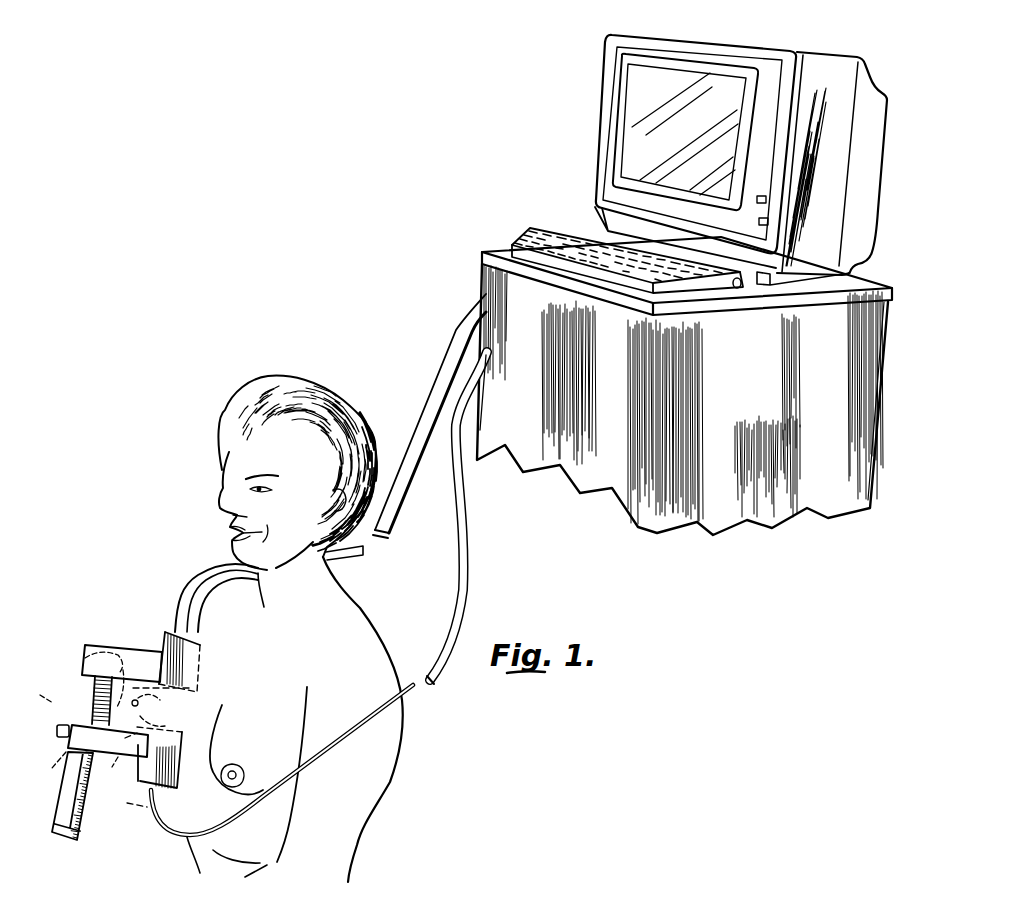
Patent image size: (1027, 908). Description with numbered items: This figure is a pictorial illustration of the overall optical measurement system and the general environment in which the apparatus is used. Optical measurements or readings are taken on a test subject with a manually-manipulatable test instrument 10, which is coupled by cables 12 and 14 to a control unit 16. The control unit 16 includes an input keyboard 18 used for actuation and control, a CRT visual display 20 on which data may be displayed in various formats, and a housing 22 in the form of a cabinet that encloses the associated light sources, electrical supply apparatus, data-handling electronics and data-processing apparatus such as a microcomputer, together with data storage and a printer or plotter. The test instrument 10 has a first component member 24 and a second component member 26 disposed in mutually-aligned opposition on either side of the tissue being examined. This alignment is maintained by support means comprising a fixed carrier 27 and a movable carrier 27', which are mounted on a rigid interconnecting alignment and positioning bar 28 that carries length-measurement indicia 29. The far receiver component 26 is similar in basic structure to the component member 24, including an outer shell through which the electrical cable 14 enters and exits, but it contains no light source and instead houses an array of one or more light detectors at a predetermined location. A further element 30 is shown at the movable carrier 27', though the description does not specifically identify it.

The test instrument 10 is at (125, 644).
The cable 12 is at (403, 490).
The cable 14 is at (473, 555).
The control unit 16 is at (568, 112).
The input keyboard 18 is at (560, 232).
The CRT visual display 20 is at (692, 38).
The housing 22 is at (781, 405).
The first component member 24 is at (194, 640).
The second component member 26 is at (137, 774).
The fixed carrier 27 is at (105, 643).
The movable carrier 27' is at (82, 756).
The alignment and positioning bar 28 is at (80, 676).
The length-measurement indicia 29 is at (80, 836).
The adjustment knob 30 is at (57, 731).